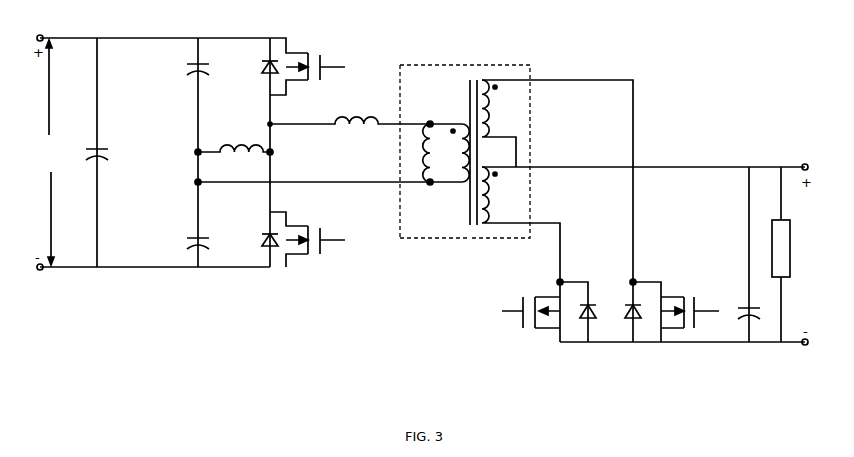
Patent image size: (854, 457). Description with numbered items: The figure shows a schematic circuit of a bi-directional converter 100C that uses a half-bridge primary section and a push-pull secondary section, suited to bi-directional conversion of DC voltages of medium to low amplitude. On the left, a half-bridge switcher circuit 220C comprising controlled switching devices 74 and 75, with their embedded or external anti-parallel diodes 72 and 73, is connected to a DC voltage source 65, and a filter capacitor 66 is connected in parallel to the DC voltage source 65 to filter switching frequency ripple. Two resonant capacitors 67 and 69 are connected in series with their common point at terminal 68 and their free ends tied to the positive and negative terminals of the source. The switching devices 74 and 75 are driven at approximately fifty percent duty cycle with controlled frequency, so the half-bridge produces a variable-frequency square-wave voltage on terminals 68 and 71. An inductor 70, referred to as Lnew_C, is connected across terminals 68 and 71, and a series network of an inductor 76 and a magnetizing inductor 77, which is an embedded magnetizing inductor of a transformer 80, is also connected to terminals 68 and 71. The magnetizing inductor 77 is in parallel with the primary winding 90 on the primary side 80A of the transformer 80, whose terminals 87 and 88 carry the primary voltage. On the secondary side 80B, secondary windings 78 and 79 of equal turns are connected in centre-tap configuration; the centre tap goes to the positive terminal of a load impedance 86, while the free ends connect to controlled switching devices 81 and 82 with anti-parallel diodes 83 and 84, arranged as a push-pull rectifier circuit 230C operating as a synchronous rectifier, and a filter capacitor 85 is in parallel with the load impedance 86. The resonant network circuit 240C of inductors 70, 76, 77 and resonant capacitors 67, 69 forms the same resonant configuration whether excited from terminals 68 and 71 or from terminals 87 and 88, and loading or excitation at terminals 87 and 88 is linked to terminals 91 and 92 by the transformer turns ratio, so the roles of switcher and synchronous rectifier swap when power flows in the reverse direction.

The DC voltage source 65 is at (49, 152).
The filter capacitor 66 is at (100, 148).
The resonant capacitor 67 is at (192, 65).
The terminal 68 is at (194, 154).
The resonant capacitor 69 is at (192, 241).
The inductor 70 is at (246, 148).
The terminal 71 is at (273, 152).
The anti-parallel diode 72 is at (262, 67).
The anti-parallel diode 73 is at (262, 240).
The controlled switching device 74 is at (297, 58).
The controlled switching device 75 is at (289, 232).
The inductor 76 is at (352, 122).
The magnetizing inductor 77 is at (425, 147).
The secondary winding 78 is at (487, 126).
The secondary winding 79 is at (487, 212).
The transformer 80 is at (466, 62).
The primary side 80A is at (431, 80).
The secondary side 80B is at (505, 85).
The controlled switching device 81 is at (523, 318).
The controlled switching device 82 is at (697, 320).
The anti-parallel diode 83 is at (585, 322).
The anti-parallel diode 84 is at (635, 322).
The filter capacitor 85 is at (748, 306).
The load impedance 86 is at (792, 252).
The terminal 87 is at (432, 123).
The terminal 88 is at (430, 184).
The primary winding 90 is at (462, 143).
The terminal 91 is at (562, 281).
The terminal 92 is at (634, 281).
The bi-directional converter 100C is at (380, 55).
The half-bridge switcher circuit 220C is at (208, 298).
The push-pull rectifier circuit 230C is at (615, 367).
The resonant network circuit 240C is at (353, 192).